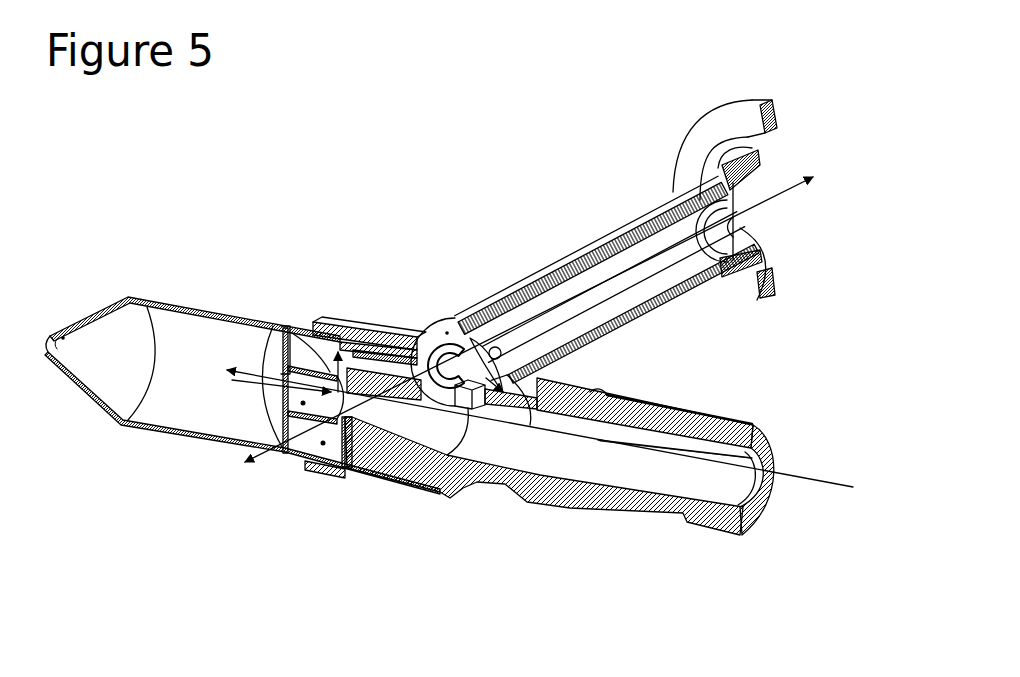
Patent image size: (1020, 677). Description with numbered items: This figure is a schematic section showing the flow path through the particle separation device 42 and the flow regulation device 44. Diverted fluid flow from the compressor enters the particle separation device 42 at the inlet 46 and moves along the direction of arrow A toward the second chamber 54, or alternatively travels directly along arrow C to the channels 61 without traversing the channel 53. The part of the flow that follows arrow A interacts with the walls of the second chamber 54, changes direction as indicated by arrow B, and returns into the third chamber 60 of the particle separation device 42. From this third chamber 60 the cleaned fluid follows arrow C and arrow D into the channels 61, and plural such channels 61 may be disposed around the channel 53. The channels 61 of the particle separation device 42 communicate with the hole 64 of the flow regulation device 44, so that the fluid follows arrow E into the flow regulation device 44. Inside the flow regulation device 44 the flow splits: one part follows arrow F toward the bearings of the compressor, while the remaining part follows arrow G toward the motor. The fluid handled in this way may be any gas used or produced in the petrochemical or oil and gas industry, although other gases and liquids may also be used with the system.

The particle separation device 42 is at (680, 510).
The flow regulation device 44 is at (563, 270).
The inlet 46 is at (755, 495).
The channel 53 is at (305, 383).
The second chamber 54 is at (180, 383).
The third chamber 60 is at (323, 443).
The channels 61 is at (393, 360).
The hole 64 is at (473, 345).
The arrow A is at (598, 440).
The arrow B is at (303, 403).
The arrow C is at (288, 330).
The arrow D is at (372, 360).
The arrow E is at (530, 425).
The arrow F is at (347, 478).
The arrow G is at (640, 270).